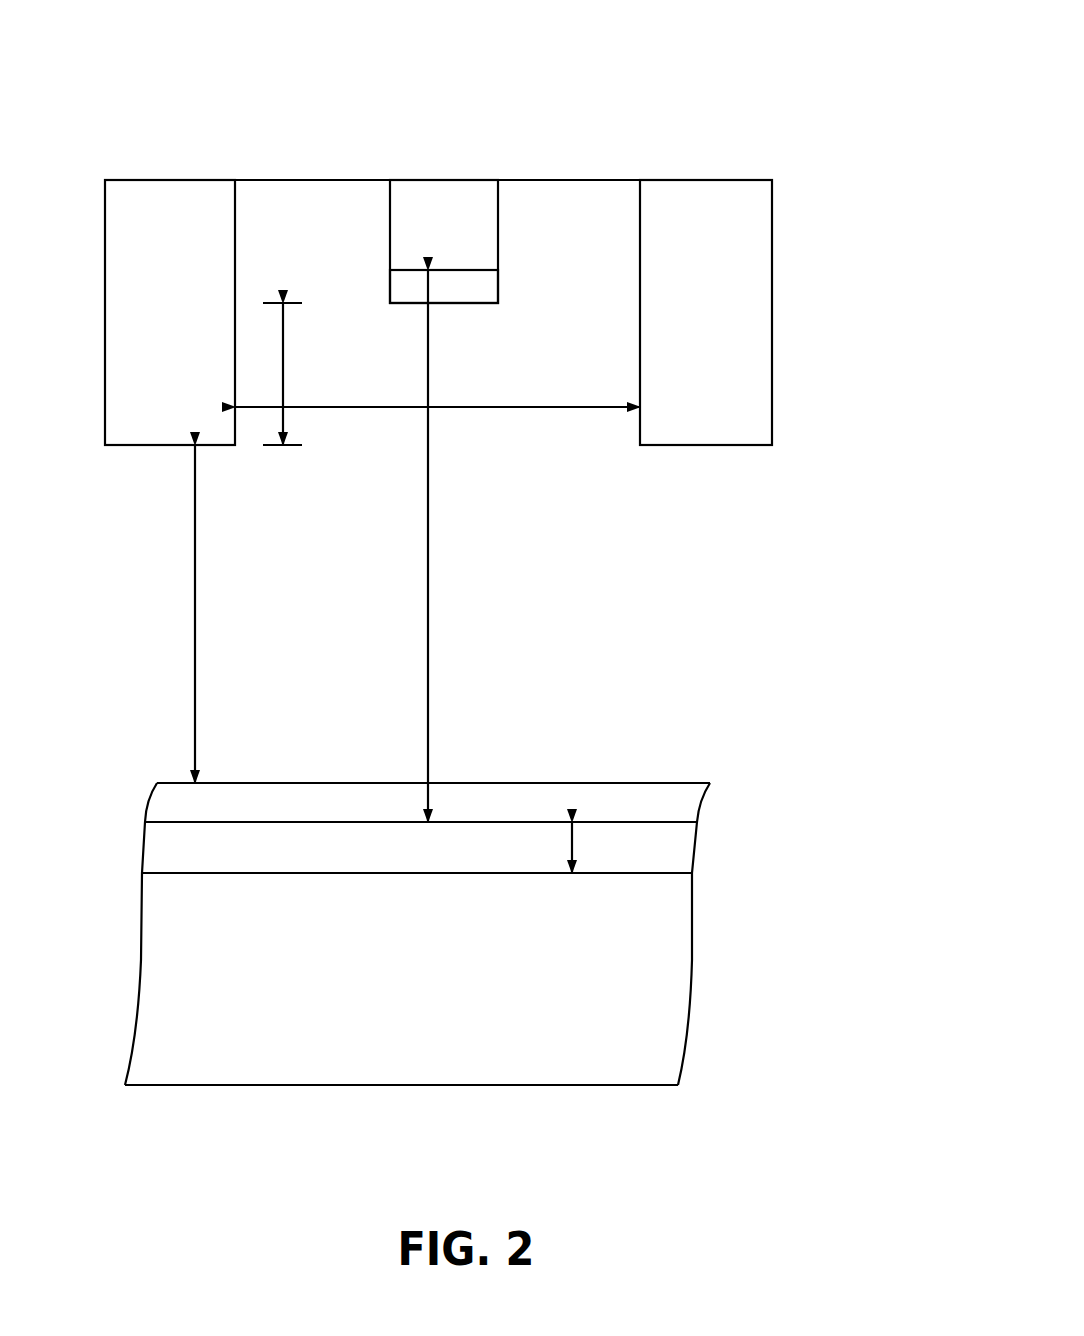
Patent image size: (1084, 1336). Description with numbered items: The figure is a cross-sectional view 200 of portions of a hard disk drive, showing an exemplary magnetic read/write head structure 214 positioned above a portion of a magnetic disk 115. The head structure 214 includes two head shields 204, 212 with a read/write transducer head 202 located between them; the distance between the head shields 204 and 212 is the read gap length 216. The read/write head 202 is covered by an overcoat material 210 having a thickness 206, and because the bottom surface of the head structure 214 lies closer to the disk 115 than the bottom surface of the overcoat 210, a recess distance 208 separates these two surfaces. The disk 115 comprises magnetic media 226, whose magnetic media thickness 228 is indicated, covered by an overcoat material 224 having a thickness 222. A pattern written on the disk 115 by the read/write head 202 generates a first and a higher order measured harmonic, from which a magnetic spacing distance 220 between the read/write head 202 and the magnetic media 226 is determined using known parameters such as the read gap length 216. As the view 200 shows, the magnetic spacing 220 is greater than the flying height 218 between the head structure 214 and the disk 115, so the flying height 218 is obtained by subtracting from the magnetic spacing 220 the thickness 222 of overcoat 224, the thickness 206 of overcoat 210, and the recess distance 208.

The cross-sectional view 200 is at (692, 46).
The read/write transducer head 202 is at (448, 212).
The head shield 204 is at (189, 353).
The thickness of overcoat material 206 is at (385, 308).
The recess distance 208 is at (283, 355).
The overcoat material 210 is at (467, 288).
The head shield 212 is at (725, 353).
The magnetic read/write head structure 214 is at (795, 445).
The read gap length 216 is at (502, 410).
The flying height 218 is at (195, 688).
The magnetic spacing distance 220 is at (428, 690).
The thickness of overcoat material 222 is at (138, 822).
The overcoat material 224 is at (372, 816).
The magnetic media 226 is at (345, 859).
The magnetic media thickness 228 is at (568, 847).
The magnetic disk 115 is at (715, 1085).